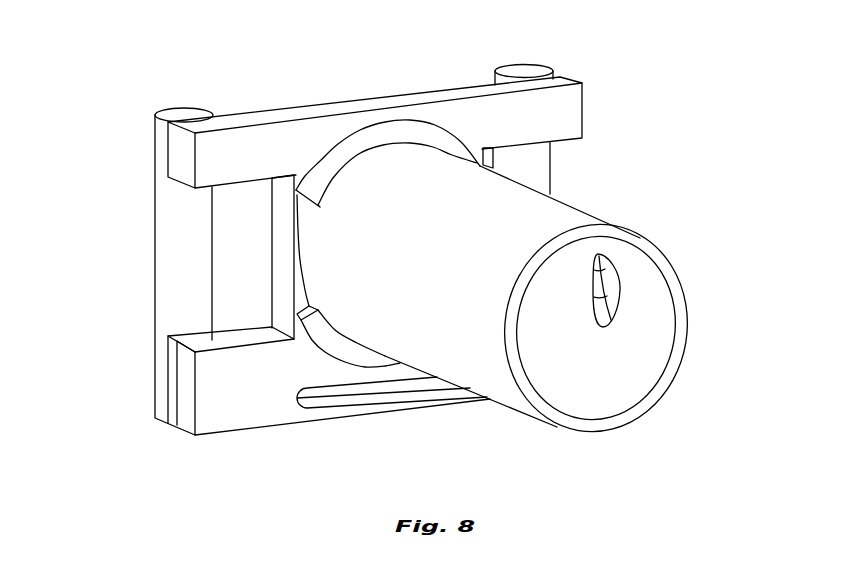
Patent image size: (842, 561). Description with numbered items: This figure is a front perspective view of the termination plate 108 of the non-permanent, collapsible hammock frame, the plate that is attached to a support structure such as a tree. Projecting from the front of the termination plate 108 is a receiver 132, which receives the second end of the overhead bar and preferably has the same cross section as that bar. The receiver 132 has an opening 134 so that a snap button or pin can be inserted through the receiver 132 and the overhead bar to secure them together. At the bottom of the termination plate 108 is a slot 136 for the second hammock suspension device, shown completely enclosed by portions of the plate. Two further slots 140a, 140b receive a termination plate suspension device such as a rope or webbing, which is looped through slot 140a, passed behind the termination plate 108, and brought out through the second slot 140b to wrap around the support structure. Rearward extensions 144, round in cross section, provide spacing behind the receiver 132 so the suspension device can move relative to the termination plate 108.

The termination plate 108 is at (583, 115).
The receiver 132 is at (678, 263).
The opening 134 is at (612, 310).
The slot 136 is at (348, 387).
The slot 140a is at (232, 247).
The second slot 140b is at (494, 167).
The rearward extensions 144 is at (523, 62).